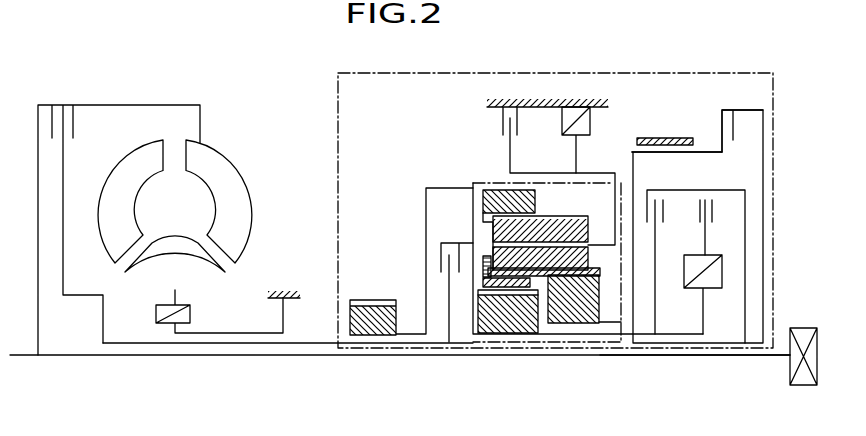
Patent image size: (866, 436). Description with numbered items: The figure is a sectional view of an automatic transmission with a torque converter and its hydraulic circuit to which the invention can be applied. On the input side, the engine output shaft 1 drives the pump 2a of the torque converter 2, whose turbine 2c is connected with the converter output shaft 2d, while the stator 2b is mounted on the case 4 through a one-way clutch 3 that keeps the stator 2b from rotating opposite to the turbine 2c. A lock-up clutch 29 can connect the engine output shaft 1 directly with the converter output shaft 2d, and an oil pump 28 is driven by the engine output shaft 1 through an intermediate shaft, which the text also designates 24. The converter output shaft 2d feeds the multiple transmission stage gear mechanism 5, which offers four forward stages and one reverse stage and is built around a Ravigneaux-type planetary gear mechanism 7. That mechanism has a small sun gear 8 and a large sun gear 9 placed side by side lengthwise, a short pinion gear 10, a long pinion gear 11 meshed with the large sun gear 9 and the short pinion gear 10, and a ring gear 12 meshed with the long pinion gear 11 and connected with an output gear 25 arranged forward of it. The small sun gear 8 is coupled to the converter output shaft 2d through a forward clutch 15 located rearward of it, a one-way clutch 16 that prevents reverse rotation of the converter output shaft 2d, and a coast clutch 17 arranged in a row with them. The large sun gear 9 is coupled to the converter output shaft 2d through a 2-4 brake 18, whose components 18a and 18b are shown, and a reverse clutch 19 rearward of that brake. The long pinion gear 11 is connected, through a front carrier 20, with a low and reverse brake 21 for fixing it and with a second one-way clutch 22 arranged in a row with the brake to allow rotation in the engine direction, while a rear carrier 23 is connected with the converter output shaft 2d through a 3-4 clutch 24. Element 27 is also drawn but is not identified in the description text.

The engine output shaft 1 is at (32, 356).
The torque converter 2 is at (193, 212).
The pump 2a is at (240, 190).
The stator 2b is at (198, 282).
The turbine 2c is at (125, 163).
The converter output shaft 2d is at (305, 342).
The one-way clutch 3 is at (156, 312).
The case 4 is at (284, 296).
The multiple transmission stage gear mechanism 5 is at (577, 73).
The Ravigneaux-type planetary gear mechanism 7 is at (498, 183).
The small sun gear 8 is at (505, 333).
The large sun gear 9 is at (575, 323).
The short pinion gear 10 is at (483, 283).
The long pinion gear 11 is at (592, 228).
The ring gear 12 is at (480, 193).
The forward clutch 15 is at (712, 205).
The one-way clutch 16 is at (705, 286).
The coast clutch 17 is at (662, 205).
The 2-4 brake 18 is at (655, 137).
The switch contact plate 18a is at (682, 138).
The switch lead 18b is at (735, 150).
The reverse clutch 19 is at (727, 110).
The front carrier 20 is at (580, 173).
The low & reverse brake 21 is at (519, 117).
The second one-way clutch 22 is at (591, 121).
The rear carrier 23 is at (483, 240).
The 3-4 clutch 24 is at (441, 265).
The output gear 25 is at (366, 335).
The electrode 27 is at (88, 105).
The oil pump 28 is at (818, 358).
The lock-up clutch 29 is at (632, 357).